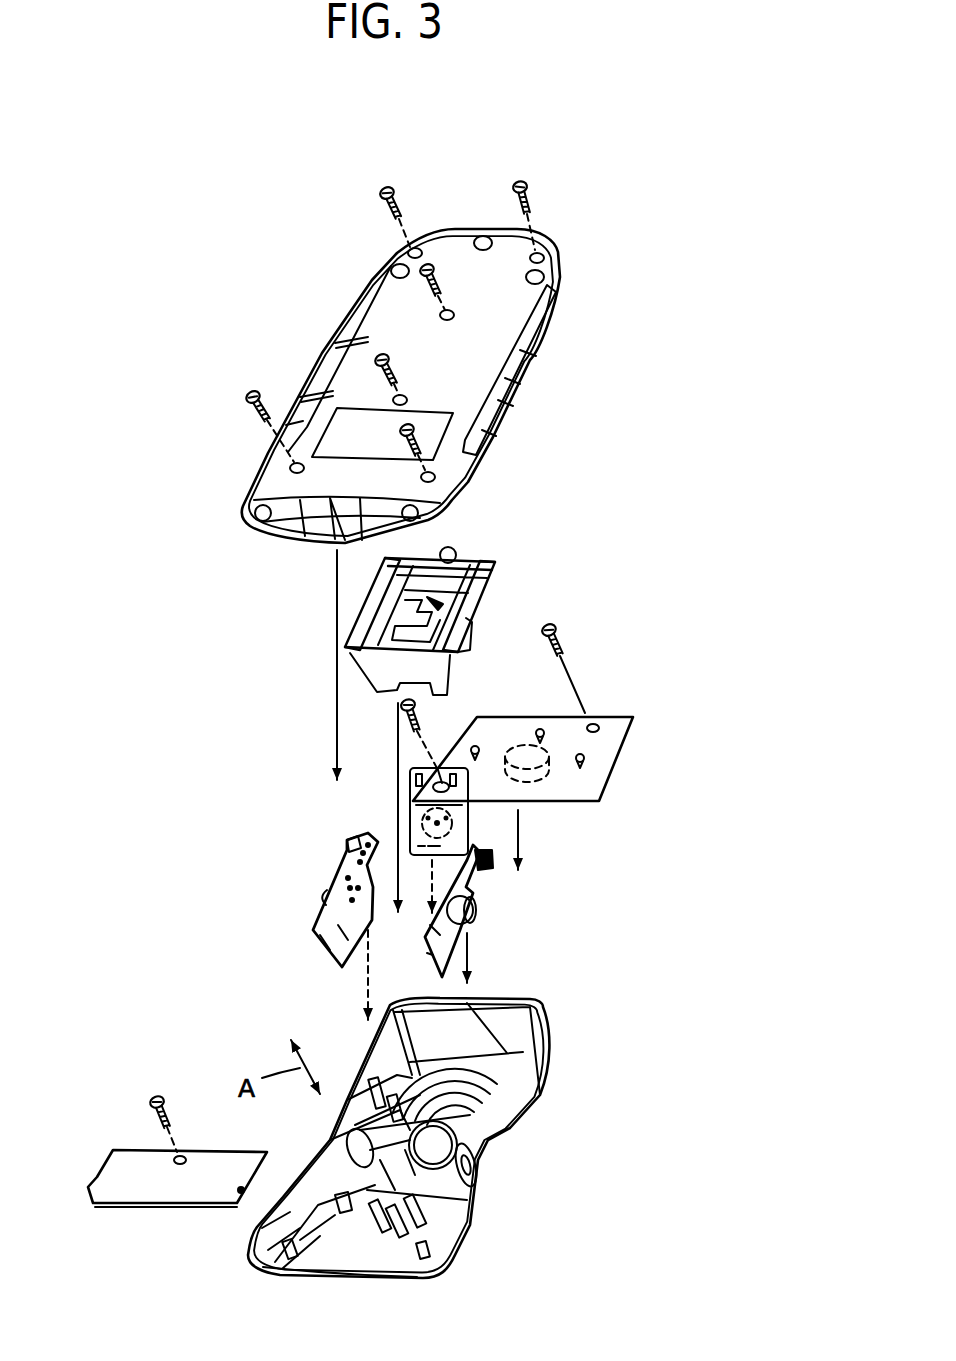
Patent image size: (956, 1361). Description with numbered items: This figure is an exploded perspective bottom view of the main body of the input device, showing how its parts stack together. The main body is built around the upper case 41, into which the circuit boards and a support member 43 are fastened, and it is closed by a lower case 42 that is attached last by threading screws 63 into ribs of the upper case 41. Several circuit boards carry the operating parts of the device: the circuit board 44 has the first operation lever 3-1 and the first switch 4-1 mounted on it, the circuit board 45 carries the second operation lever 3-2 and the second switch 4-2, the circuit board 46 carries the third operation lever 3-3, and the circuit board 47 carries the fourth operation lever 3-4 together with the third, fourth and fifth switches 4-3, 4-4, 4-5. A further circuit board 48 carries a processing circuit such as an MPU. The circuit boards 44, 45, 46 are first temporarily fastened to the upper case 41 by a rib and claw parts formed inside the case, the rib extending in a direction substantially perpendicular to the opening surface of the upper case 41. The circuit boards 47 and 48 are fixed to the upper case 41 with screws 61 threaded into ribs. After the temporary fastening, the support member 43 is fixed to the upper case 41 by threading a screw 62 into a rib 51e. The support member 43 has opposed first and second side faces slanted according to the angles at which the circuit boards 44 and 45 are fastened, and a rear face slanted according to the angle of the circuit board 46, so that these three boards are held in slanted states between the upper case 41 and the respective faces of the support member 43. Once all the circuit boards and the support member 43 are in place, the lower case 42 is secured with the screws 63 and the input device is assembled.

The upper case 41 is at (553, 1058).
The lower case 42 is at (483, 463).
The support member 43 is at (497, 570).
The circuit board 44 is at (322, 940).
The circuit board 45 is at (452, 943).
The circuit board 46 is at (414, 815).
The circuit board 47 is at (612, 731).
The circuit board 48 is at (165, 1192).
The rib 51e is at (363, 1227).
The screw 61 is at (557, 632).
The screw 62 is at (363, 597).
The screw 63 is at (394, 190).
The first operation lever 3-1 is at (324, 897).
The second operation lever 3-2 is at (477, 913).
The third operation lever 3-3 is at (470, 826).
The fourth operation lever 3-4 is at (552, 772).
The first switch 4-1 is at (348, 845).
The second switch 4-2 is at (493, 868).
The third switch 4-3 is at (470, 750).
The fourth switch 4-4 is at (548, 722).
The fifth switch 4-5 is at (588, 762).